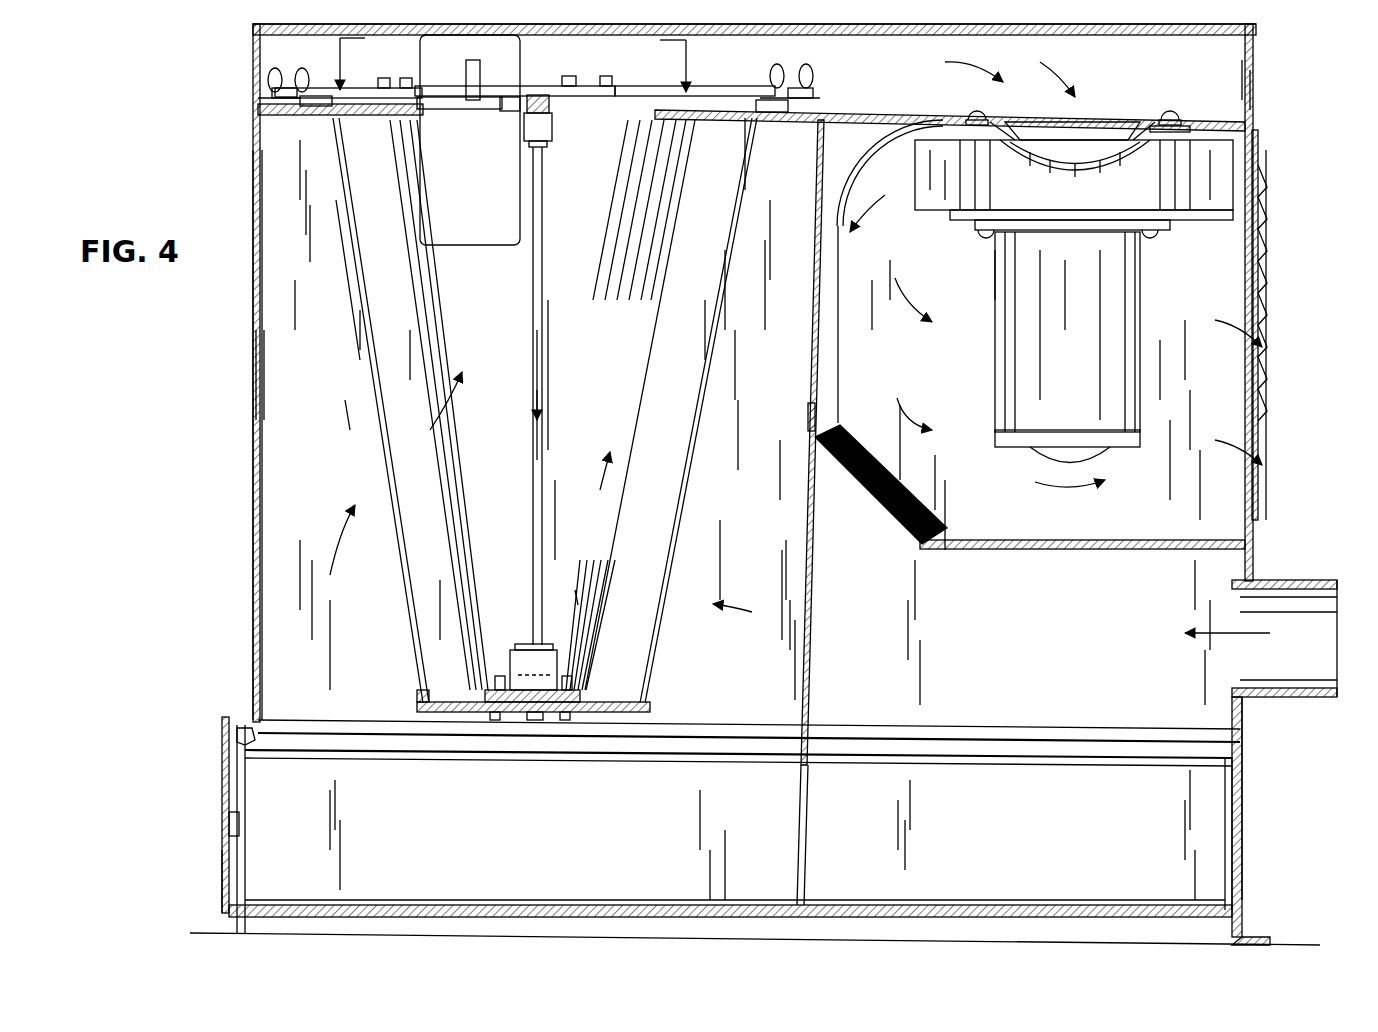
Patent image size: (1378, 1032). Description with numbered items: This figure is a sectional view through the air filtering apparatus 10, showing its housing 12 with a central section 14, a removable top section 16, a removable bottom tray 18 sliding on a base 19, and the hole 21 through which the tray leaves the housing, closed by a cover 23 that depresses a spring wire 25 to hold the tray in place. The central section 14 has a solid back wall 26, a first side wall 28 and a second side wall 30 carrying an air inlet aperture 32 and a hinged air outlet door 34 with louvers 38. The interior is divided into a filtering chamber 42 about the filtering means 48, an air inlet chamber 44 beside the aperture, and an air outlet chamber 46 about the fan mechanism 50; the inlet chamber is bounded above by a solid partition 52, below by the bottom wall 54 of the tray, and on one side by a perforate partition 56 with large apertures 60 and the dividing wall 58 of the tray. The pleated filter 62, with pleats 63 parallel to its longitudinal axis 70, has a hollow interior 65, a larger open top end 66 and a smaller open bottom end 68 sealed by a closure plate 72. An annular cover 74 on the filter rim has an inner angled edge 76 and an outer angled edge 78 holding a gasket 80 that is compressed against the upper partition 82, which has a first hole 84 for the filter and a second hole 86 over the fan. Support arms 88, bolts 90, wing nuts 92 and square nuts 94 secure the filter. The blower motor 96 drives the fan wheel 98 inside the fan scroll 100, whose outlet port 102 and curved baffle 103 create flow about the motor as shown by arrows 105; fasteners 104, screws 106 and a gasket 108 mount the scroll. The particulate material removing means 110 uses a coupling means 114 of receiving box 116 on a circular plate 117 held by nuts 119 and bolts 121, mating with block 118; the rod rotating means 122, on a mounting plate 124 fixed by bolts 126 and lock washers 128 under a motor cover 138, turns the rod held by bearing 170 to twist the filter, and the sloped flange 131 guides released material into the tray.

The apparatus 10 is at (170, 457).
The housing 12 is at (250, 388).
The central section 14 is at (250, 512).
The removable top section 16 is at (1258, 72).
The removable bottom tray 18 is at (232, 785).
The base 19 is at (445, 903).
The hole 21 is at (235, 746).
The cover 23 is at (222, 872).
The spring wire 25 is at (228, 828).
The back wall 26 is at (252, 322).
The first side wall 28 is at (250, 348).
The second side wall 30 is at (1244, 724).
The air inlet aperture 32 is at (1312, 592).
The air outlet door 34 is at (1260, 202).
The louvers 38 is at (1264, 335).
The filtering chamber 42 is at (312, 415).
The air inlet chamber 44 is at (1059, 512).
The air outlet chamber 46 is at (891, 388).
The filtering means 48 is at (360, 404).
The fan mechanism 50 is at (992, 280).
The solid partition 52 is at (1060, 550).
The bottom wall 54 is at (955, 903).
The perforate partition 56 is at (812, 618).
The dividing wall 58 is at (808, 812).
The apertures 60 is at (810, 472).
The filter 62 is at (362, 374).
The pleats 63 is at (380, 346).
The hollow interior 65 is at (569, 430).
The open top end 66 is at (647, 128).
The open bottom end 68 is at (490, 695).
The longitudinal axis 70 is at (543, 366).
The closure plate 72 is at (617, 714).
The annular cover 74 is at (712, 105).
The inner angled edge 76 is at (680, 128).
The outer angled edge 78 is at (760, 118).
The gasket 80 is at (312, 114).
The upper partition 82 is at (896, 120).
The first hole 84 is at (326, 130).
The second hole 86 is at (1085, 128).
The support arms 88 is at (360, 110).
The bolts 90 is at (277, 70).
The wing nuts 92 is at (262, 82).
The square nut 94 is at (262, 103).
The blower motor 96 is at (1016, 339).
The fan wheel 98 is at (1085, 166).
The fan scroll 100 is at (1198, 212).
The outlet port 102 is at (915, 198).
The curved baffle 103 is at (843, 178).
The fasteners 104 is at (998, 236).
The arrows 105 is at (925, 330).
The screws or bolts 106 is at (977, 112).
The gasket 108 is at (1145, 124).
The particulate material removing means 110 is at (503, 298).
The coupling means 114 is at (578, 620).
The receiving box 116 is at (515, 660).
The circular plate 117 is at (533, 722).
The block 118 is at (522, 644).
The nuts 119 is at (494, 682).
The bolts 121 is at (495, 722).
The rod rotating means 122 is at (680, 62).
The mounting plate 124 is at (503, 86).
The bolts 126 is at (405, 78).
The lock washers 128 is at (347, 86).
The downwardly sloped flange 131 is at (262, 722).
The motor cover 138 is at (470, 248).
The bearing 170 is at (552, 125).